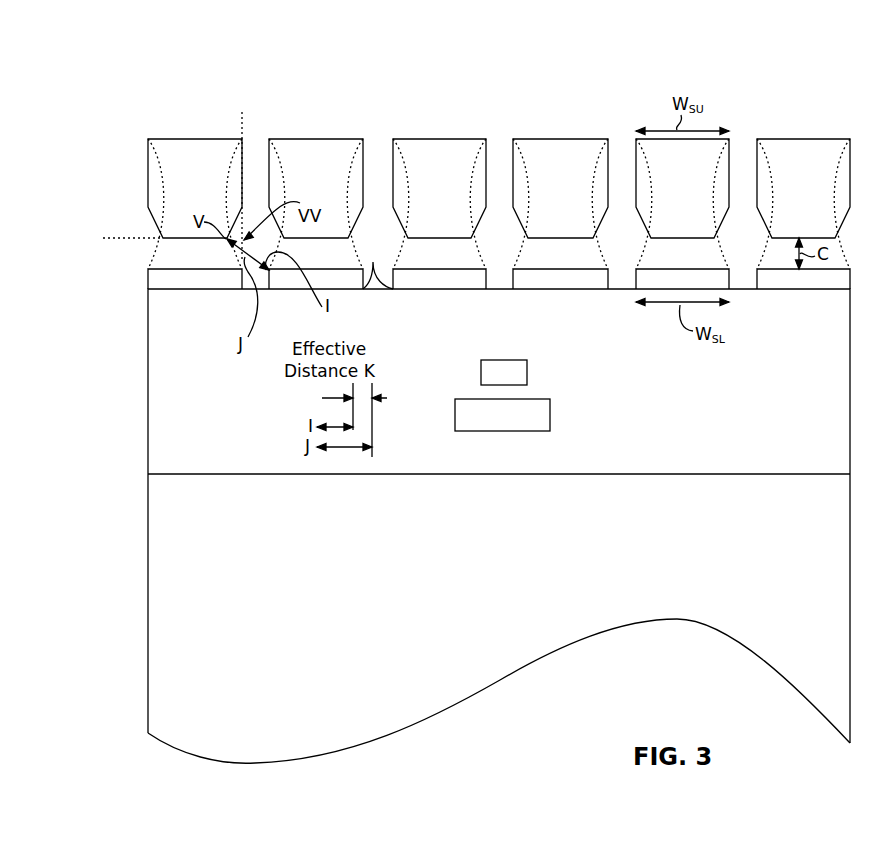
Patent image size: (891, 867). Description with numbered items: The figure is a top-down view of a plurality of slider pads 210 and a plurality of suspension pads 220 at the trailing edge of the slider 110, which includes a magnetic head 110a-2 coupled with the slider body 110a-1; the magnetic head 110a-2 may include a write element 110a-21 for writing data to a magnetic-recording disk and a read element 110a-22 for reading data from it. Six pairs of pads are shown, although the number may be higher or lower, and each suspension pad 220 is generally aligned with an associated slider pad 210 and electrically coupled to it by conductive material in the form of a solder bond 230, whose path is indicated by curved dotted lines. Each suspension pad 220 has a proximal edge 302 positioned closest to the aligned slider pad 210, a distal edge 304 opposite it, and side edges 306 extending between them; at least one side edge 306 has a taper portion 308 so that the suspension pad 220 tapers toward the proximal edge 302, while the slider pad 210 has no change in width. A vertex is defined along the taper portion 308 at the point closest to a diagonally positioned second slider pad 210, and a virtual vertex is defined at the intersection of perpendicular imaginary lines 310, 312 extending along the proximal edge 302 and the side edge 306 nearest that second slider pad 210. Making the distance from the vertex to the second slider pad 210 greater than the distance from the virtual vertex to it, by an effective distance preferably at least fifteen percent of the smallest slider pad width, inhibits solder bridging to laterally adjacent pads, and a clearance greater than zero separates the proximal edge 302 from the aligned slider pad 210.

The slider 110 is at (108, 128).
The slider body 110a-1 is at (148, 596).
The magnetic head 110a-2 is at (148, 390).
The write element 110a-21 is at (527, 371).
The read element 110a-22 is at (550, 415).
The slider pads 210 is at (373, 262).
The suspension pads 220 is at (435, 138).
The solder bonds 230 is at (470, 178).
The proximal edge 302 is at (556, 241).
The distal edge 304 is at (563, 138).
The side edges 306 is at (636, 158).
The taper portion 308 is at (756, 232).
The imaginary line 310 is at (118, 238).
The imaginary line 312 is at (243, 130).